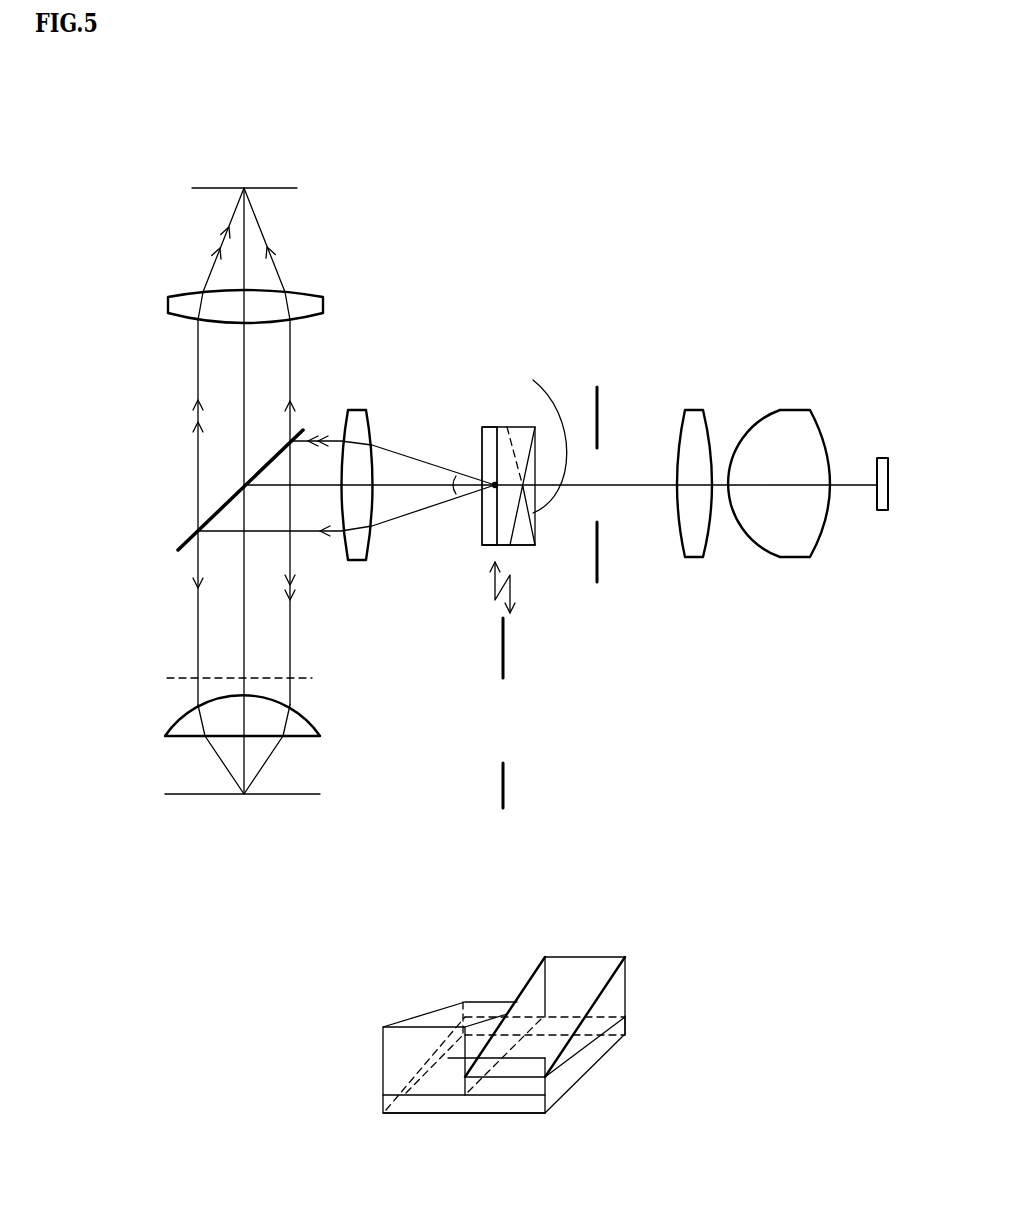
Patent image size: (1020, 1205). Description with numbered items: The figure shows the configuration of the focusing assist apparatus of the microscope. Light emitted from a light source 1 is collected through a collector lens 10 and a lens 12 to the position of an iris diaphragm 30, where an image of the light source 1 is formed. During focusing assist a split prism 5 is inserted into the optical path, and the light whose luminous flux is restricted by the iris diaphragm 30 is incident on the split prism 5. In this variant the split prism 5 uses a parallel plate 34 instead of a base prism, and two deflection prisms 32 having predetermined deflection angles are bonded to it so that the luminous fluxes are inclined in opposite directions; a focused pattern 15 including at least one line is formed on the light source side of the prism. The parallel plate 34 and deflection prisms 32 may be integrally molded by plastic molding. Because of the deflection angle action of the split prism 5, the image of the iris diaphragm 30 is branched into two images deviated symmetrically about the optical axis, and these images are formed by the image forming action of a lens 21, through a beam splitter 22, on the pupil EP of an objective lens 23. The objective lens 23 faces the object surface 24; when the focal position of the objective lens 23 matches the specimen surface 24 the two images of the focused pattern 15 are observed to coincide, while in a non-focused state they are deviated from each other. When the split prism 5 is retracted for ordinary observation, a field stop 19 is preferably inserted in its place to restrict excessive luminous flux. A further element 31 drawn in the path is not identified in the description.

The light source 1 is at (877, 458).
The collector lens 10 is at (795, 557).
The lens 12 is at (693, 558).
The focused pattern 15 is at (507, 427).
The field stop 19 is at (503, 787).
The lens 21 is at (360, 410).
The beam splitter 22 is at (207, 519).
The objective lens 23 is at (315, 720).
The object surface 24 is at (307, 793).
The iris diaphragm 30 is at (597, 582).
The lens 31 is at (305, 293).
The deflection prisms 32 is at (538, 427).
The parallel plate 34 is at (481, 535).
The split prism 5 is at (450, 415).
The pupil EP is at (307, 677).